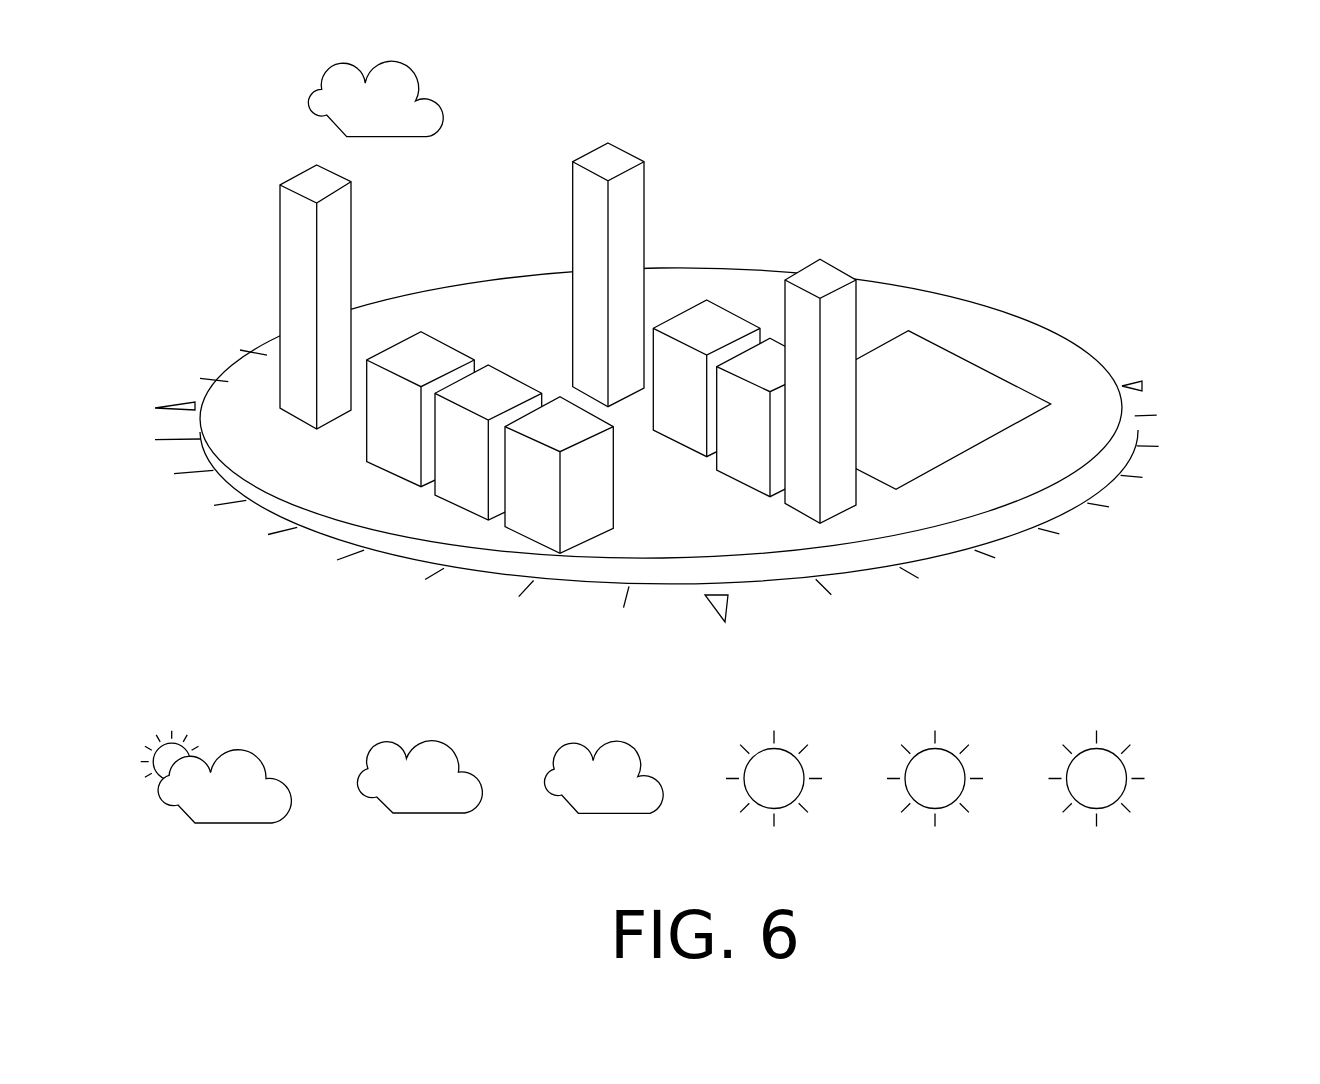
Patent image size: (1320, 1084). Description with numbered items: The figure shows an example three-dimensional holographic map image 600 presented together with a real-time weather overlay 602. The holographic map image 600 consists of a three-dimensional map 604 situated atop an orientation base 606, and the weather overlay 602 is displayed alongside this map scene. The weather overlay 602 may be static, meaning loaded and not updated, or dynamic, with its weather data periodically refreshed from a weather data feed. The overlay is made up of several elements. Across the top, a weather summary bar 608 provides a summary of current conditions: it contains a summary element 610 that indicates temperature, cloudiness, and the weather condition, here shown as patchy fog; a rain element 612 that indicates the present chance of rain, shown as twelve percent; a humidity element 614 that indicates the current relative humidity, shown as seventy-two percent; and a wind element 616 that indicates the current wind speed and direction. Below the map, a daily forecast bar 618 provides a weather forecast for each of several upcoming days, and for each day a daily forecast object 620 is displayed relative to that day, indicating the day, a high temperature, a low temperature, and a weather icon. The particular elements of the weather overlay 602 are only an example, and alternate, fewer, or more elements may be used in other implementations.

The 3-D holographic map image 600 is at (176, 208).
The weather overlay 602 is at (1183, 678).
The 3-D map 604 is at (950, 301).
The orientation base 606 is at (302, 530).
The weather summary bar 608 is at (1092, 108).
The summary element 610 is at (308, 76).
The rain element 612 is at (690, 77).
The humidity element 614 is at (845, 77).
The wind element 616 is at (1007, 78).
The daily forecast bar 618 is at (1178, 773).
The daily forecast object 620 is at (207, 878).